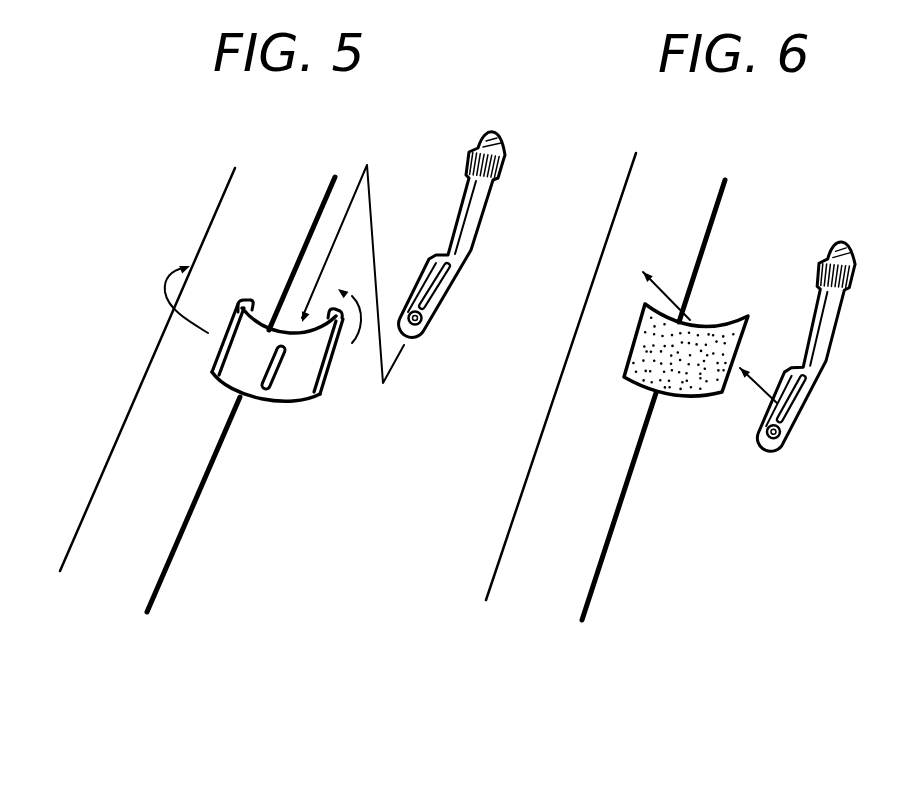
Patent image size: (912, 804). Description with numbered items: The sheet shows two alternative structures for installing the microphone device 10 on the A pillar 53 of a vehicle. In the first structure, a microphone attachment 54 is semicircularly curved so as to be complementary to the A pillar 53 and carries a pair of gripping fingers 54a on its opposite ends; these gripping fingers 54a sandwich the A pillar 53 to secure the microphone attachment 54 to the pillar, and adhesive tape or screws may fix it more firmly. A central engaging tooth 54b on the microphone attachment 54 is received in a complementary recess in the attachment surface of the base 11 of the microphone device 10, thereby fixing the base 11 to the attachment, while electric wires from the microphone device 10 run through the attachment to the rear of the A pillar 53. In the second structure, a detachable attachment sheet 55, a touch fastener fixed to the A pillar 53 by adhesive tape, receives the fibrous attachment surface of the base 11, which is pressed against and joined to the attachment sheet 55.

In FIG. 5, the microphone device 10 is at (487, 188).
In FIG. 6, the microphone device 10 is at (847, 318).
In FIG. 5, the base 11 is at (417, 283).
In FIG. 6, the base 11 is at (786, 392).
In FIG. 5, the A pillar 53 is at (167, 517).
In FIG. 6, the A pillar 53 is at (603, 515).
In FIG. 5, the microphone attachment 54 is at (325, 377).
In FIG. 5, the gripping fingers 54a is at (337, 313).
In FIG. 5, the engaging tooth 54b is at (280, 376).
In FIG. 6, the attachment sheet 55 is at (703, 388).